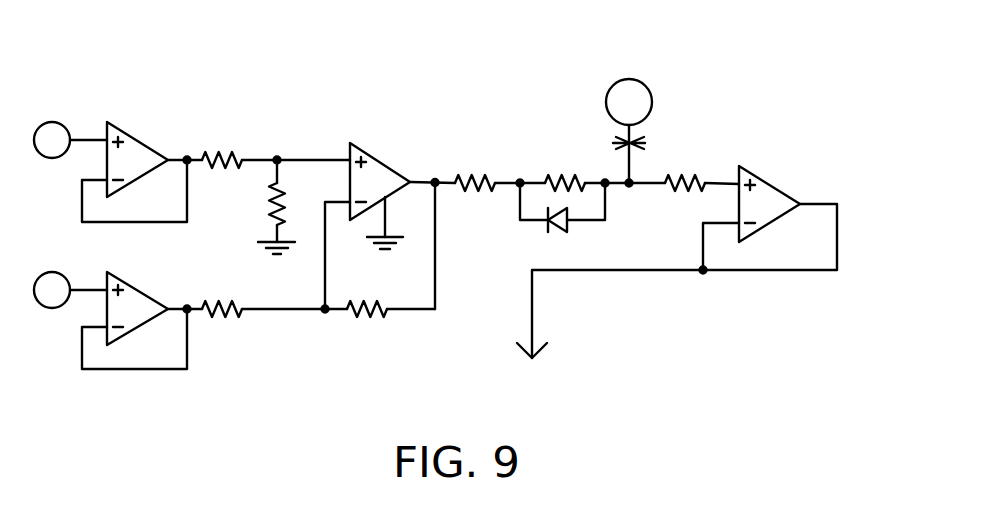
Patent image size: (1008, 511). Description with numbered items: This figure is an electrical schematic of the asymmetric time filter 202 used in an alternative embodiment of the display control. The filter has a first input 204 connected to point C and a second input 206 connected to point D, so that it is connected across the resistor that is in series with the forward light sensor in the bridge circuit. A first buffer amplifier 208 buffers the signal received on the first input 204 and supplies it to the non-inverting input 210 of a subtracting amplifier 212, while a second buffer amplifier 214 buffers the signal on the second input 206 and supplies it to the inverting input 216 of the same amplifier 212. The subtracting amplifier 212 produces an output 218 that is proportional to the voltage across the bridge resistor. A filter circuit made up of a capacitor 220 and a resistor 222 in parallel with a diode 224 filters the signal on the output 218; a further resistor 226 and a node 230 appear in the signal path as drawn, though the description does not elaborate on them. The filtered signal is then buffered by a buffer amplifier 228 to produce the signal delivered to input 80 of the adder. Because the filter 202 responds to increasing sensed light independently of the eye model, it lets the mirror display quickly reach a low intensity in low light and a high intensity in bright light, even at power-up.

The asymmetric time filter 202 is at (432, 56).
The first input 204 is at (82, 138).
The second input 206 is at (85, 285).
The first buffer amplifier 208 is at (132, 137).
The non-inverting input 210 is at (312, 160).
The subtracting amplifier 212 is at (377, 160).
The buffer amplifier 214 is at (138, 288).
The inverting input 216 is at (325, 268).
The output 218 is at (450, 180).
The capacitor 220 is at (643, 146).
The resistor 222 is at (557, 180).
The diode 224 is at (580, 222).
The resistor 226 is at (700, 180).
The buffer amplifier 228 is at (773, 182).
The node 230 is at (480, 191).
The input 80 is at (568, 268).